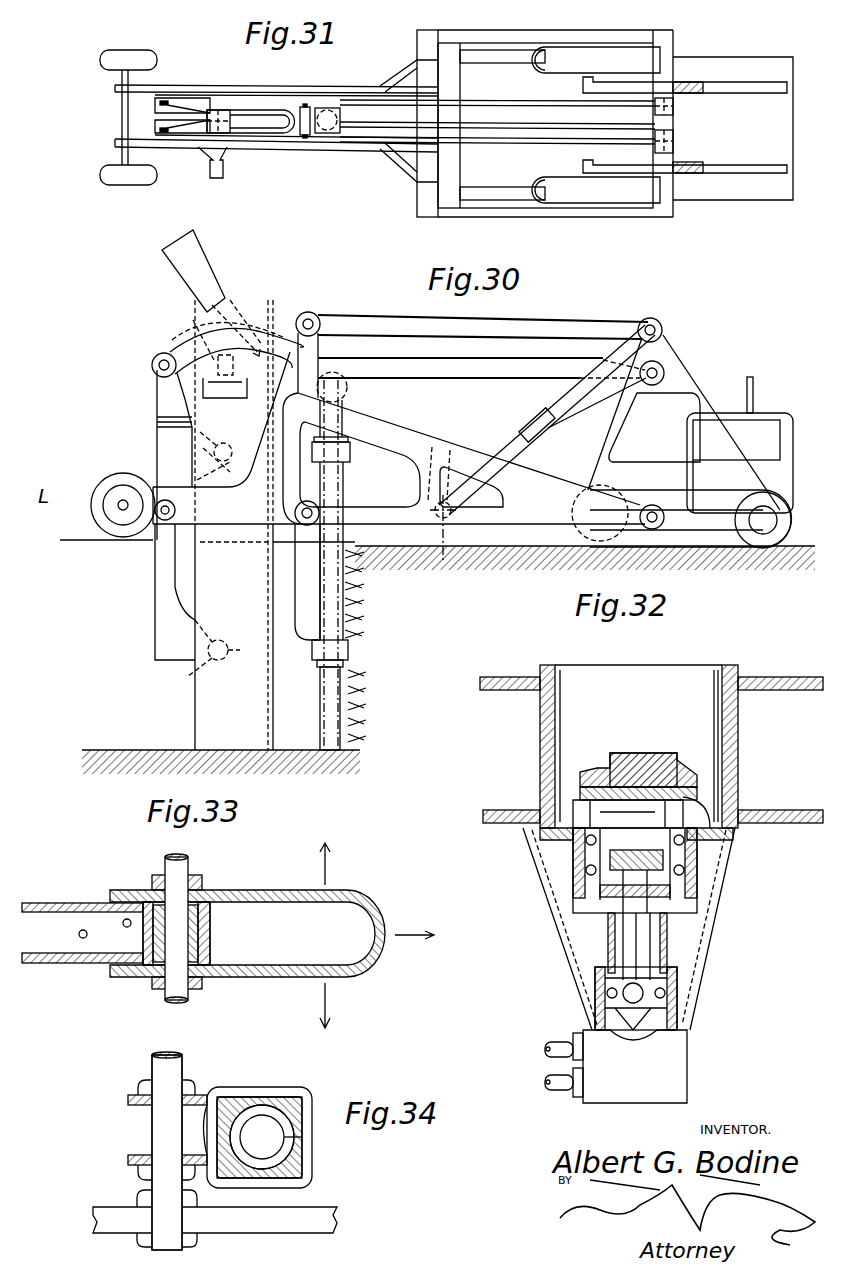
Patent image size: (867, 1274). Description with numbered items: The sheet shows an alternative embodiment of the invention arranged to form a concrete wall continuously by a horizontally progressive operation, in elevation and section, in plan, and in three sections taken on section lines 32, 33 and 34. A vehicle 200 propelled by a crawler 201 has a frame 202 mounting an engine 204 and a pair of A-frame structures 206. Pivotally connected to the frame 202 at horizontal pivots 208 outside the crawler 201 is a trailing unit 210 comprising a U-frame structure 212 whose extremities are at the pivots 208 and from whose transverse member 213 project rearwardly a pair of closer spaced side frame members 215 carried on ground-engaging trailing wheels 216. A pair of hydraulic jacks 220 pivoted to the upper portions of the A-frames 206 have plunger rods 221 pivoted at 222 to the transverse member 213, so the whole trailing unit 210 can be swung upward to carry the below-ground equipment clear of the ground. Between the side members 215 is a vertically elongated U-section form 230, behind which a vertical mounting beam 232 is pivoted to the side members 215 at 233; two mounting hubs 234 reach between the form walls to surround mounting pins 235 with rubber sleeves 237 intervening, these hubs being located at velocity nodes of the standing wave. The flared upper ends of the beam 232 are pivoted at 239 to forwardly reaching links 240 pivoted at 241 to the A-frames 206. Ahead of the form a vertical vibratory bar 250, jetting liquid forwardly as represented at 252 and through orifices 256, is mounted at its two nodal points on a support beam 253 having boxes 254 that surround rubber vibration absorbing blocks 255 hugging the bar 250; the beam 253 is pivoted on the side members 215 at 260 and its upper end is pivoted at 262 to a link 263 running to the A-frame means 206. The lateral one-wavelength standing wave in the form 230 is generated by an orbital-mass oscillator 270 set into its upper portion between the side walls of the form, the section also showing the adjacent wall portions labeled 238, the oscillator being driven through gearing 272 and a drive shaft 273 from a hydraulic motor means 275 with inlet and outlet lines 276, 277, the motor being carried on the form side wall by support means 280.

In FIG. 30, the section line 32— 32 is at (152, 365).
In FIG. 30, the section line 33— 33 is at (193, 648).
In FIG. 30, the section line 34— 34 is at (310, 452).
In FIG. 31, the vehicle 200 is at (628, 222).
In FIG. 30, the vehicle 200 is at (800, 480).
In FIG. 31, the crawler 201 is at (765, 190).
In FIG. 30, the crawler 201 is at (793, 520).
In FIG. 30, the frame 202 is at (722, 540).
In FIG. 31, the engine 204 is at (780, 115).
In FIG. 30, the engine 204 is at (775, 418).
In FIG. 31, the A-frame structures 206 is at (712, 78).
In FIG. 30, the A-frame structures 206 is at (692, 368).
In FIG. 31, the pivots 208 is at (660, 217).
In FIG. 30, the pivots 208 is at (664, 510).
In FIG. 31, the trailing unit 210 is at (418, 205).
In FIG. 30, the trailing unit 210 is at (452, 436).
In FIG. 31, the U-frame structure 212 is at (506, 208).
In FIG. 30, the U-frame structure 212 is at (578, 478).
In FIG. 31, the transverse member 213 is at (455, 82).
In FIG. 30, the transverse member 213 is at (430, 550).
In FIG. 31, the side frame members 215 is at (312, 92).
In FIG. 30, the side frame members 215 is at (237, 524).
In FIG. 34, the side frame members 215 is at (338, 1218).
In FIG. 31, the trailing wheels 216 is at (118, 48).
In FIG. 31, the hydraulic jacks 220 is at (572, 200).
In FIG. 30, the hydraulic jacks 220 is at (552, 405).
In FIG. 30, the plunger rods 221 is at (530, 440).
In FIG. 30, the pivotal connection 222 is at (452, 520).
In FIG. 31, the form 230 is at (250, 133).
In FIG. 30, the form 230 is at (200, 562).
In FIG. 33, the form 230 is at (345, 892).
In FIG. 31, the mounting beam 232 is at (162, 115).
In FIG. 30, the mounting beam 232 is at (160, 598).
In FIG. 33, the mounting beam 232 is at (55, 964).
In FIG. 30, the pivotal mounting 233 is at (157, 470).
In FIG. 30, the mounting hubs 234 is at (205, 442).
In FIG. 33, the mounting hubs 234 is at (205, 946).
In FIG. 30, the mounting pins 235 is at (218, 660).
In FIG. 33, the mounting pins 235 is at (175, 912).
In FIG. 33, the rubber sleeves 237 is at (168, 992).
In FIG. 32, the plates 238 is at (787, 693).
In FIG. 31, the pivotal connection 239 is at (168, 96).
In FIG. 30, the pivotal connection 239 is at (160, 354).
In FIG. 31, the links 240 is at (248, 108).
In FIG. 30, the links 240 is at (350, 322).
In FIG. 30, the pivotal connection 241 is at (662, 340).
In FIG. 30, the vibratory bar 250 is at (345, 690).
In FIG. 34, the vibratory bar 250 is at (278, 1100).
In FIG. 30, the jetting orifices 252 is at (362, 627).
In FIG. 30, the support beam 253 is at (300, 602).
In FIG. 34, the support beam 253 is at (128, 1158).
In FIG. 34, the boxes 254 is at (268, 1060).
In FIG. 34, the rubber vibration absorbing blocks 255 is at (300, 1097).
In FIG. 34, the orifices 256 is at (338, 1130).
In FIG. 30, the pivotal mounting 260 is at (282, 507).
In FIG. 34, the pivotal mounting 260 is at (137, 1238).
In FIG. 31, the pivotal connection 262 is at (300, 106).
In FIG. 30, the pivotal connection 262 is at (307, 311).
In FIG. 30, the link 263 is at (550, 322).
In FIG. 30, the oscillator 270 is at (196, 325).
In FIG. 32, the oscillator 270 is at (680, 685).
In FIG. 32, the gearing 272 is at (698, 864).
In FIG. 32, the drive shaft 273 is at (640, 932).
In FIG. 32, the motor means 275 is at (690, 1048).
In FIG. 32, the inlet line 276 is at (550, 1042).
In FIG. 32, the outlet line 277 is at (560, 1088).
In FIG. 30, the support means 280 is at (208, 258).
In FIG. 32, the support means 280 is at (545, 900).